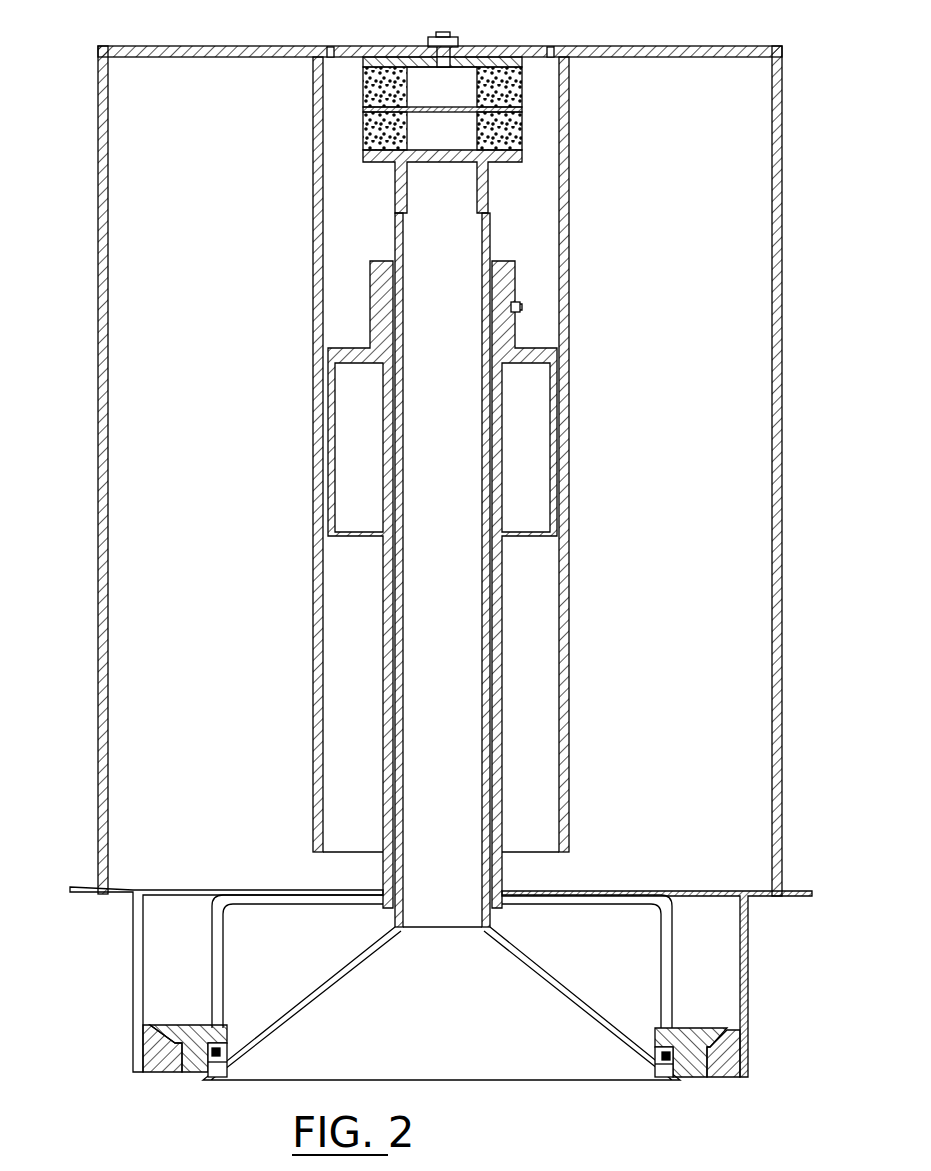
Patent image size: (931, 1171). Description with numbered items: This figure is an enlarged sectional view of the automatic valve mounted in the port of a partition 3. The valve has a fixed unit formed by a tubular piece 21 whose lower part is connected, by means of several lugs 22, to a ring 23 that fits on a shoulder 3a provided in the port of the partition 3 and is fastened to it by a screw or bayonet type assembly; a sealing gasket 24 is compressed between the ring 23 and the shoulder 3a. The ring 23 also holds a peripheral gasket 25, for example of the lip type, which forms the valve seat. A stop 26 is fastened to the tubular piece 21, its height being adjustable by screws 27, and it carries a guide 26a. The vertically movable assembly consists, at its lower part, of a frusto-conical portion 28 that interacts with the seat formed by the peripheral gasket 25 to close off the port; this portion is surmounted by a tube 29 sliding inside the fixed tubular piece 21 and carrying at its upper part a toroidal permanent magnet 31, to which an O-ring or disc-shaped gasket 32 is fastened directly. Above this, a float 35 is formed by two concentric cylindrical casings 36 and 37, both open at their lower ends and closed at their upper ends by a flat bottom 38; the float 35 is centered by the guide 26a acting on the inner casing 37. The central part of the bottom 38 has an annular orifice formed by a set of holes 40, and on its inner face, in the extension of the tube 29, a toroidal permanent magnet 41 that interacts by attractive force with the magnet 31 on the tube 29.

The partition 3 is at (82, 893).
The shoulder 3a is at (150, 1050).
The tubular piece 21 is at (516, 570).
The lugs 22 is at (592, 903).
The ring 23 is at (190, 1028).
The sealing gasket 24 is at (710, 1073).
The peripheral gasket 25 is at (230, 1055).
The stop 26 is at (377, 292).
The guide 26a is at (552, 483).
The screws 27 is at (519, 307).
The frusto-conical portion 28 is at (325, 975).
The tube 29 is at (487, 607).
The toroidal permanent magnet 31 is at (377, 133).
The O-ring or disc-shaped gasket 32 is at (503, 110).
The float 35 is at (419, 448).
The outer cylindrical casing 36 is at (102, 385).
The inner cylindrical casing 37 is at (318, 462).
The flat bottom 38 is at (215, 46).
The holes 40 is at (330, 47).
The toroidal permanent magnet 41 is at (367, 87).